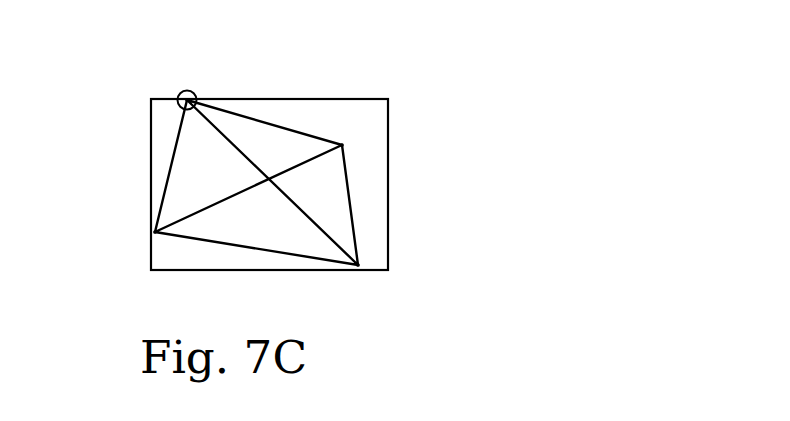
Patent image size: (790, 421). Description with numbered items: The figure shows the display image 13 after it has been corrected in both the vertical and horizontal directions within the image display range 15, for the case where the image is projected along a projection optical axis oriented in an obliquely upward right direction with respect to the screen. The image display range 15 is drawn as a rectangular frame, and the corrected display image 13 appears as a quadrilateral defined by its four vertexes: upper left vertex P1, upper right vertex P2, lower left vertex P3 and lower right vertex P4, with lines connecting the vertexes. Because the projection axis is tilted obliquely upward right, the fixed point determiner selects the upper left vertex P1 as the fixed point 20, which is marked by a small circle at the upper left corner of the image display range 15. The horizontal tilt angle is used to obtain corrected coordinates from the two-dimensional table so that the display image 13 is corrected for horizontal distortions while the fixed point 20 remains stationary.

The display image 13 is at (320, 258).
The image display range 15 is at (333, 99).
The fixed point 20 is at (186, 91).
The upper left vertex P1 is at (194, 93).
The upper right vertex P2 is at (342, 145).
The lower left vertex P3 is at (156, 234).
The lower right vertex P4 is at (358, 264).